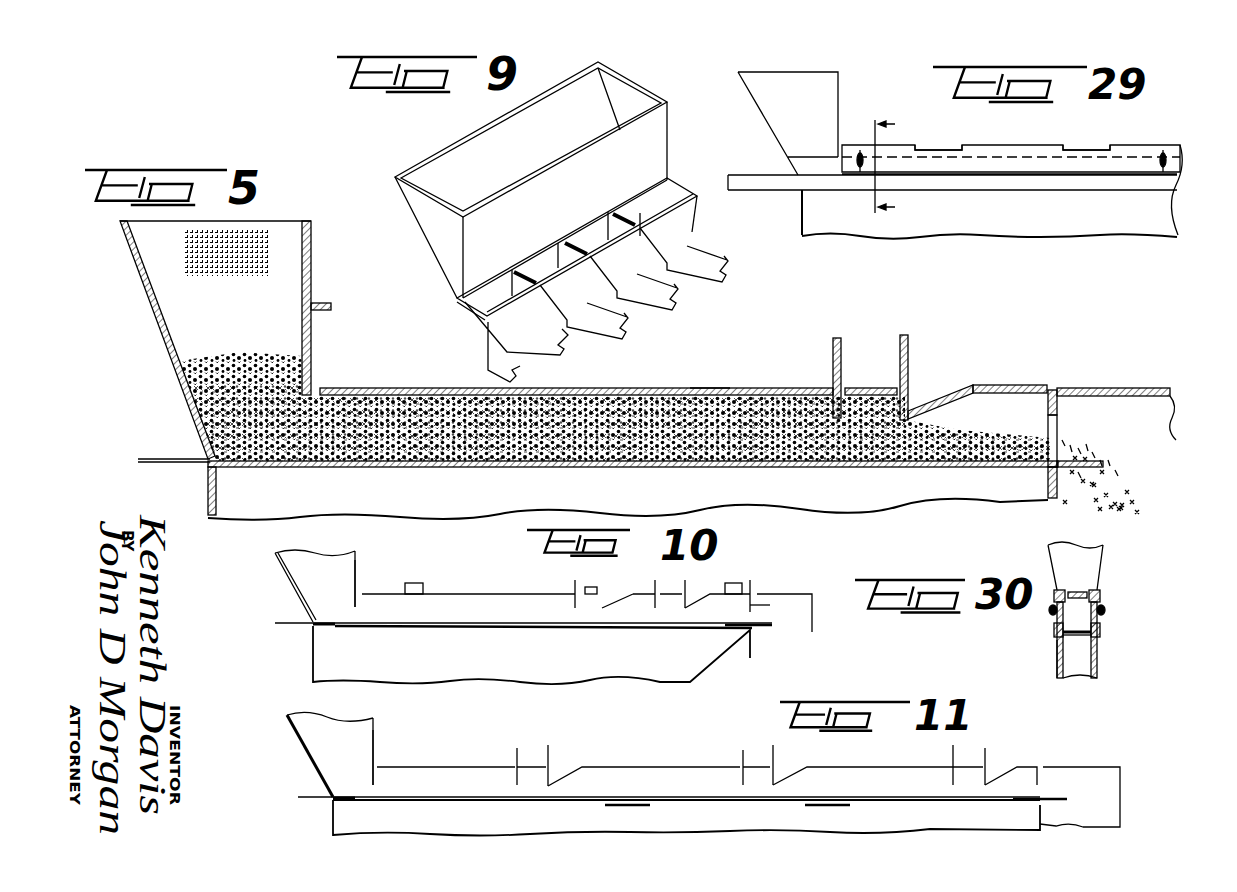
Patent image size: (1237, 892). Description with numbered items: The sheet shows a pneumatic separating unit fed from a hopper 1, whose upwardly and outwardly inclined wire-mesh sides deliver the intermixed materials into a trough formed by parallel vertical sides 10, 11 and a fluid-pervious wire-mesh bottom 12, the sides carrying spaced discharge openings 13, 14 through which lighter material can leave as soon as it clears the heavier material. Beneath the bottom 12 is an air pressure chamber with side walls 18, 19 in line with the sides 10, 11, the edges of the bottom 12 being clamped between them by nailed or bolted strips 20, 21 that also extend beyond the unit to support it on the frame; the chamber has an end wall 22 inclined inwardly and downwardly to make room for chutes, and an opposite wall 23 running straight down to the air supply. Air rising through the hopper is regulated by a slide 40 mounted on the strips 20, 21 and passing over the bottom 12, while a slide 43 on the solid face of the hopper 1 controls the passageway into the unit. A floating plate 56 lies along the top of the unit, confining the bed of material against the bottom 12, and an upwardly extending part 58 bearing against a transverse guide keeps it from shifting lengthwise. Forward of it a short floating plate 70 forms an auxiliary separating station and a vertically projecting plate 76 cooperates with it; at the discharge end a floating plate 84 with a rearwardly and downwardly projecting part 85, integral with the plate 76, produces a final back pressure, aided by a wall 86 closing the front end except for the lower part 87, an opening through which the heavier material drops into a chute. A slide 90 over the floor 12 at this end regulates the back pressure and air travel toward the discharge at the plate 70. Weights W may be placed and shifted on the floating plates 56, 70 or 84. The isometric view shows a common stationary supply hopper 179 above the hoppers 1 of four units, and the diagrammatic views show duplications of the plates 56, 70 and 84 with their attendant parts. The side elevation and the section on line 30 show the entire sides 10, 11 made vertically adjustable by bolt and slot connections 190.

In FIG. 5, the hopper 1 is at (292, 250).
In FIG. 9, the hopper 1 is at (498, 288).
In FIG. 29, the hopper 1 is at (820, 88).
In FIG. 10, the hopper 1 is at (322, 564).
In FIG. 30, the hopper 1 is at (1103, 553).
In FIG. 11, the hopper 1 is at (332, 732).
In FIG. 29, the side 10 is at (1021, 148).
In FIG. 30, the side 10 is at (1052, 598).
In FIG. 30, the side 11 is at (1100, 596).
In FIG. 5, the bottom 12 is at (472, 468).
In FIG. 10, the bottom 12 is at (626, 630).
In FIG. 30, the bottom 12 is at (1098, 634).
In FIG. 11, the bottom 12 is at (724, 803).
In FIG. 29, the discharge opening 13 is at (942, 148).
In FIG. 5, the discharge opening 14 is at (432, 370).
In FIG. 29, the side wall 18 is at (1158, 215).
In FIG. 30, the side wall 18 is at (1058, 663).
In FIG. 5, the side wall 19 is at (848, 500).
In FIG. 10, the side wall 19 is at (336, 656).
In FIG. 30, the side wall 19 is at (1098, 672).
In FIG. 11, the side wall 19 is at (350, 821).
In FIG. 29, the strip 20 is at (768, 160).
In FIG. 30, the strip 20 is at (1052, 632).
In FIG. 30, the strip 21 is at (1098, 632).
In FIG. 5, the end wall 22 is at (1058, 496).
In FIG. 5, the wall 23 is at (208, 488).
In FIG. 29, the section line 30 is at (886, 165).
In FIG. 5, the slide 40 is at (186, 458).
In FIG. 10, the slide 40 is at (292, 623).
In FIG. 11, the slide 40 is at (308, 797).
In FIG. 5, the slide 43 is at (313, 332).
In FIG. 10, the slide 43 is at (358, 567).
In FIG. 11, the slide 43 is at (376, 730).
In FIG. 5, the plate 56 is at (698, 388).
In FIG. 10, the plate 56 is at (512, 580).
In FIG. 30, the plate 56 is at (1084, 592).
In FIG. 11, the plate 56 is at (448, 766).
In FIG. 5, the upwardly extending part 58 is at (833, 346).
In FIG. 5, the plate 70 is at (858, 388).
In FIG. 10, the plate 70 is at (596, 594).
In FIG. 11, the plate 70 is at (538, 766).
In FIG. 5, the plate 76 is at (910, 340).
In FIG. 10, the plate 76 is at (603, 588).
In FIG. 5, the plate 84 is at (992, 385).
In FIG. 10, the plate 84 is at (638, 594).
In FIG. 11, the plate 84 is at (590, 765).
In FIG. 5, the rearwardly and downwardly projecting part 85 is at (944, 396).
In FIG. 10, the wall 86 is at (770, 606).
In FIG. 5, the lower part 87 is at (1069, 394).
In FIG. 10, the lower part 87 is at (790, 594).
In FIG. 11, the lower part 87 is at (1099, 767).
In FIG. 5, the slide 90 is at (1096, 454).
In FIG. 10, the slide 90 is at (774, 630).
In FIG. 11, the slide 90 is at (654, 807).
In FIG. 9, the general supply hopper 179 is at (458, 150).
In FIG. 29, the bolt and slot connection 190 is at (860, 175).
In FIG. 30, the bolt and slot connection 190 is at (1105, 612).
In FIG. 10, the weight W is at (414, 582).